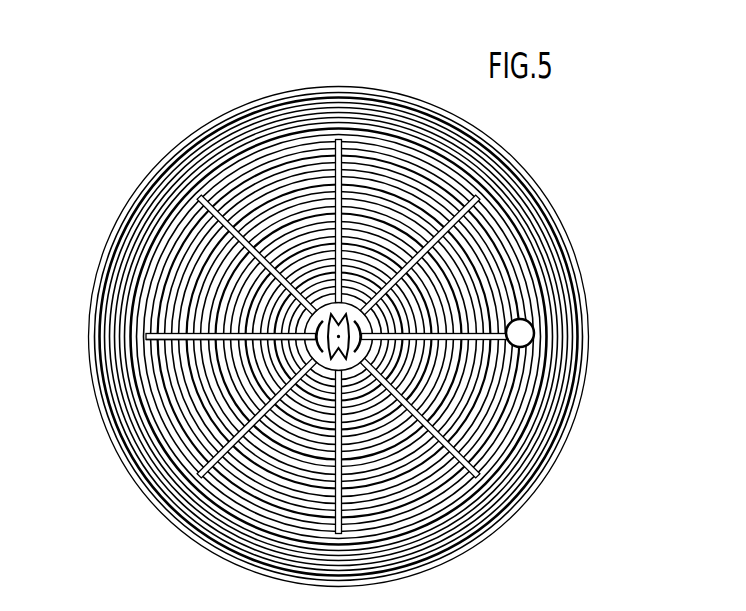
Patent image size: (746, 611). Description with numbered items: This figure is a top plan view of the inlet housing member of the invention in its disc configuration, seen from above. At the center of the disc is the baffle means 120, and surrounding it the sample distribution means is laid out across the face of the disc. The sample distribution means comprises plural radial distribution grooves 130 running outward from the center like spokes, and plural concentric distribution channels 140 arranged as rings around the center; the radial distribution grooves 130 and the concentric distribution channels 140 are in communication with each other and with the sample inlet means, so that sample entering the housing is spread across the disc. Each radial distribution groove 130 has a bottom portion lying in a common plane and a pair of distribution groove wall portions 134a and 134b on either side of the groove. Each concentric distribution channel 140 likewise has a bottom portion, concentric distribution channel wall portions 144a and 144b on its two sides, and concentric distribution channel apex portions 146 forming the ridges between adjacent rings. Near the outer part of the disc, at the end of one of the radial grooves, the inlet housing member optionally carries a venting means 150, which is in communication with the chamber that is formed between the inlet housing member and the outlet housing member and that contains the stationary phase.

The baffle means 120 is at (335, 307).
The radial distribution grooves 130 is at (193, 192).
The distribution groove wall portion 134a is at (146, 328).
The distribution groove wall portion 134b is at (146, 328).
The concentric distribution channels 140 is at (340, 248).
The concentric distribution channel wall portion 144a is at (478, 202).
The concentric distribution channel wall portion 144b is at (482, 223).
The concentric distribution channel apex portions 146 is at (435, 167).
The venting means 150 is at (515, 333).